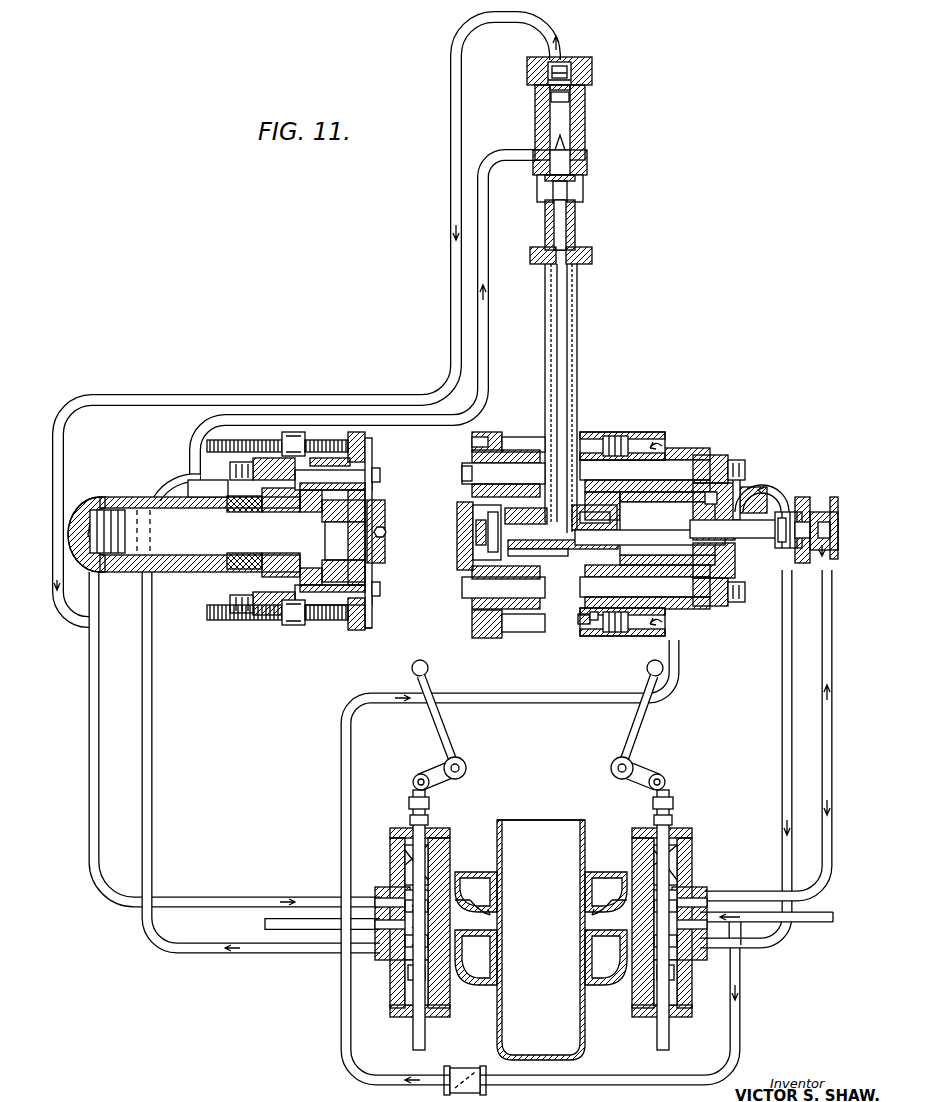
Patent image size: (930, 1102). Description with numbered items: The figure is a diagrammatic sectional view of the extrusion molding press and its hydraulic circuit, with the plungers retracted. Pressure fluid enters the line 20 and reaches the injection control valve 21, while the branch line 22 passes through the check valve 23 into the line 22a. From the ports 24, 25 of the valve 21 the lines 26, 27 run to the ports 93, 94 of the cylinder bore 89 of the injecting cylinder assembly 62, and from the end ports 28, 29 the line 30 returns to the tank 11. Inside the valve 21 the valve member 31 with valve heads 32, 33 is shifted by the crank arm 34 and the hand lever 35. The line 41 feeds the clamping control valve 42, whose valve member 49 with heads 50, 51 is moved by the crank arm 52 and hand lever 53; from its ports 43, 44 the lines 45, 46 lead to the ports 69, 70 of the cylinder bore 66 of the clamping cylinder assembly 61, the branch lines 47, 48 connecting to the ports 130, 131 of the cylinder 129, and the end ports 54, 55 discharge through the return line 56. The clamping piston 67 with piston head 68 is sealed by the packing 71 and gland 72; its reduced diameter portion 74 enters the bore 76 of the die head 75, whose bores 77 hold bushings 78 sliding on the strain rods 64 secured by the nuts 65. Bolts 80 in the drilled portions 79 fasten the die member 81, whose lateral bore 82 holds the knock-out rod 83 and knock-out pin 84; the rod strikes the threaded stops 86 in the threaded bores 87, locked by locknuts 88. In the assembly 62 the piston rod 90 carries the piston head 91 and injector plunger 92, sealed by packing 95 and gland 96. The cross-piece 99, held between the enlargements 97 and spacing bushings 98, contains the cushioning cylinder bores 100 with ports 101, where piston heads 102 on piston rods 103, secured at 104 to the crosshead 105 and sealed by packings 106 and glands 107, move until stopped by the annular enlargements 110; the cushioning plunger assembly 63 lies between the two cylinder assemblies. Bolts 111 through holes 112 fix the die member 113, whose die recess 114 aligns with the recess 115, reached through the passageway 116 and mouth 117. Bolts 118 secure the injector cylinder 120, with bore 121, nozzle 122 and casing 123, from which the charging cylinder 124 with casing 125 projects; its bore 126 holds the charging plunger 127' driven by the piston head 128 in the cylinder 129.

The tank 11 is at (566, 835).
The line 20 is at (818, 920).
The injection control valve 21 is at (690, 852).
The branch line 22 is at (742, 1020).
The line 22a is at (338, 775).
The check valve 23 is at (462, 1066).
The port 24 is at (696, 885).
The port 25 is at (684, 955).
The line 26 is at (760, 896).
The line 27 is at (782, 830).
The end port 28 is at (634, 858).
The end port 29 is at (630, 975).
The line 30 is at (606, 885).
The valve member 31 is at (666, 828).
The valve head 32 is at (695, 896).
The valve head 33 is at (686, 975).
The crank arm 34 is at (645, 770).
The injection control valve hand lever 35 is at (643, 711).
The line 41 is at (303, 935).
The clamping control valve 42 is at (392, 848).
The port 43 is at (392, 870).
The port 44 is at (410, 948).
The line 45 is at (90, 797).
The line 46 is at (143, 805).
The branch line 47 is at (451, 256).
The branch line 48 is at (489, 238).
The valve member 49 is at (426, 830).
The valve head 50 is at (380, 890).
The valve head 51 is at (406, 970).
The crank arm 52 is at (440, 772).
The clamping control valve hand lever 53 is at (445, 735).
The end port 54 is at (440, 868).
The end port 55 is at (450, 985).
The return line 56 is at (475, 885).
The clamping cylinder assembly 61 is at (140, 500).
The injecting cylinder assembly 62 is at (770, 486).
The cushioning plunger assembly 63 is at (460, 615).
The strain rods 64 is at (373, 475).
The nuts 65 is at (250, 462).
The cylinder bore 66 is at (178, 570).
The clamping piston 67 is at (152, 506).
The piston head 68 is at (108, 508).
The port 69 is at (88, 510).
The port 70 is at (238, 512).
The packing 71 is at (268, 512).
The gland 72 is at (304, 512).
The reduced diameter portion 74 is at (330, 516).
The die head 75 is at (372, 494).
The bore 76 is at (343, 552).
The bores 77 is at (352, 462).
The bushings 78 is at (345, 440).
The drilled portions 79 is at (366, 520).
The bolts 80 is at (333, 538).
The die member 81 is at (380, 476).
The lateral bore 82 is at (385, 572).
The knock-out rod 83 is at (373, 476).
The knock-out pin 84 is at (386, 534).
The threaded stops 86 is at (330, 440).
The threaded bores 87 is at (276, 628).
The locknuts 88 is at (296, 432).
The cylinder bore 89 is at (801, 497).
The piston rod 90 is at (770, 548).
The piston head 91 is at (781, 550).
The injector plunger 92 is at (650, 530).
The port 93 is at (818, 512).
The port 94 is at (743, 482).
The packing 95 is at (745, 529).
The gland 96 is at (696, 518).
The enlargements 97 is at (592, 472).
The spacing bushings 98 is at (685, 450).
The cross-piece 99 is at (612, 506).
The cushioning cylinder bores 100 is at (658, 432).
The ports 101 is at (675, 440).
The piston heads 102 is at (620, 436).
The piston rods 103 is at (515, 437).
The securing point 104 is at (490, 432).
The crosshead 105 is at (472, 442).
The packings 106 is at (592, 638).
The glands 107 is at (580, 640).
The annular enlargements 110 is at (472, 456).
The bolts 111 is at (462, 474).
The holes 112 is at (503, 480).
The die member 113 is at (457, 510).
The die recess 114 is at (473, 523).
The recess 115 is at (386, 505).
The passageway 116 is at (476, 537).
The mouth 117 is at (497, 532).
The bolts 118 is at (605, 512).
The injector cylinder 120 is at (553, 552).
The bore 121 is at (518, 524).
The nozzle or nose portion 122 is at (503, 583).
The casing 123 is at (528, 549).
The charging cylinder 124 is at (597, 338).
The casing 125 is at (579, 288).
The bore 126 is at (547, 283).
The tube 127' is at (573, 232).
The piston head 128 is at (584, 92).
The cylinder 129 is at (584, 130).
The port 130 is at (562, 64).
The port 131 is at (555, 143).